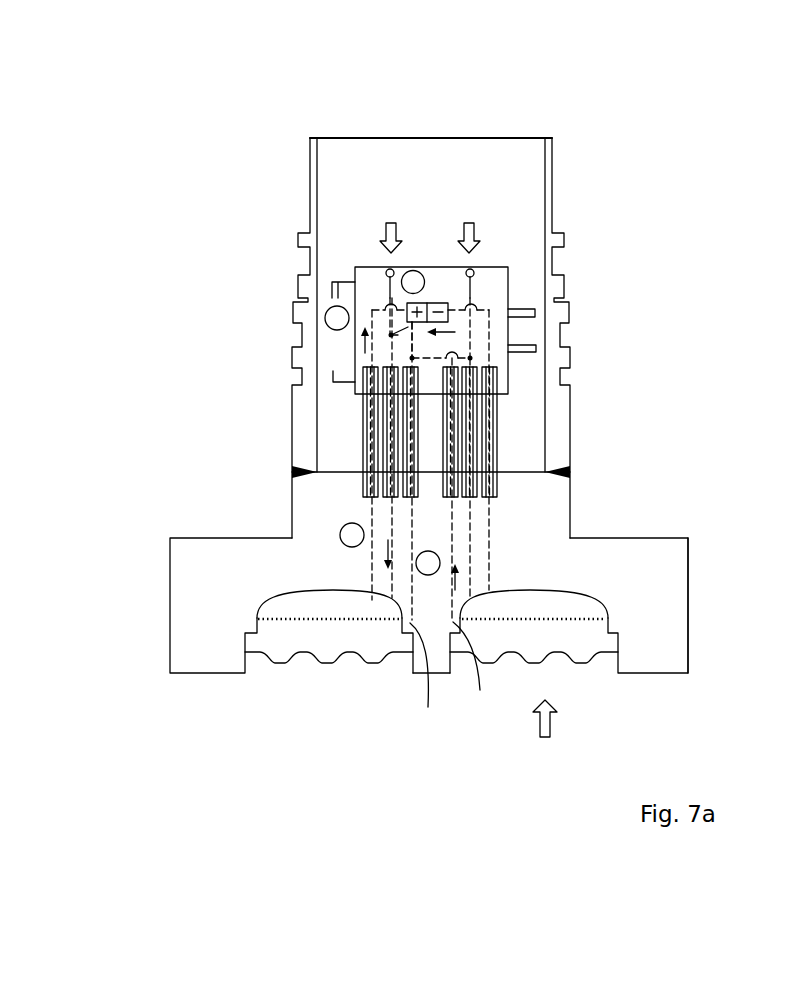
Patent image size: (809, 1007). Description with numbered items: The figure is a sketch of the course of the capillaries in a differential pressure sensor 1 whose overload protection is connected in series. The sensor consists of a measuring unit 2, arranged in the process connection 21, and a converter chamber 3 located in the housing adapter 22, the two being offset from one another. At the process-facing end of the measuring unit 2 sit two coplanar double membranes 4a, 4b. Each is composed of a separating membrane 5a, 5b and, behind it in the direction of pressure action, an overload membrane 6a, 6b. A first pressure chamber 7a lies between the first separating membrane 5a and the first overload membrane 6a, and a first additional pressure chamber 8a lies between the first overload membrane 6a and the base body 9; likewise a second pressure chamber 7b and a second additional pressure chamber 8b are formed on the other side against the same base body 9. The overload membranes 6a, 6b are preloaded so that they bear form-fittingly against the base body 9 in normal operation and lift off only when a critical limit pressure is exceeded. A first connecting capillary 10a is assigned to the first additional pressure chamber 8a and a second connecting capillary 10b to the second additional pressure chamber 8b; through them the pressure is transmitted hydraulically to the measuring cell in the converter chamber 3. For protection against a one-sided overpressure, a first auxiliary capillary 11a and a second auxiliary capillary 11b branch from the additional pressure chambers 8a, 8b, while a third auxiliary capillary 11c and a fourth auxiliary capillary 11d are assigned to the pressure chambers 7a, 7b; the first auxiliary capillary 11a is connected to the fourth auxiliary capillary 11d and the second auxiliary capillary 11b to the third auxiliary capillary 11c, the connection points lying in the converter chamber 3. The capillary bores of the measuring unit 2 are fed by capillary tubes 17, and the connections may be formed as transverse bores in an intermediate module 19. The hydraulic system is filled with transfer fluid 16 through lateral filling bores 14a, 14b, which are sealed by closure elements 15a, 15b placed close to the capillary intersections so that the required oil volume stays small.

The differential pressure sensor 1 is at (285, 151).
The housing adapter 22 is at (316, 168).
The converter chamber 3 is at (508, 283).
The first filling bore 14a is at (391, 296).
The second filling bore 14b is at (471, 288).
The first closure element 15a is at (387, 268).
The second closure element 15b is at (473, 268).
The transfer fluid 16 is at (472, 298).
The capillary tubes 17 is at (405, 452).
The intermediate module 19 is at (530, 450).
The first connecting capillary 10a is at (372, 520).
The second connecting capillary 10b is at (489, 548).
The first auxiliary capillary 11a is at (388, 586).
The second auxiliary capillary 11b is at (470, 520).
The third auxiliary capillary 11c is at (429, 532).
The fourth auxiliary capillary 11d is at (474, 540).
The measuring unit 2 is at (207, 651).
The process connection 21 is at (688, 600).
The base body 9 is at (660, 657).
The first overload membrane 6a is at (305, 622).
The second overload membrane 6b is at (550, 617).
The first additional pressure chamber 8a is at (278, 610).
The second additional pressure chamber 8b is at (583, 605).
The first pressure chamber 7a is at (312, 640).
The second pressure chamber 7b is at (590, 647).
The first separating membrane 5a is at (380, 663).
The second separating membrane 5b is at (577, 662).
The first double membrane 4a is at (338, 671).
The second double membrane 4b is at (508, 671).